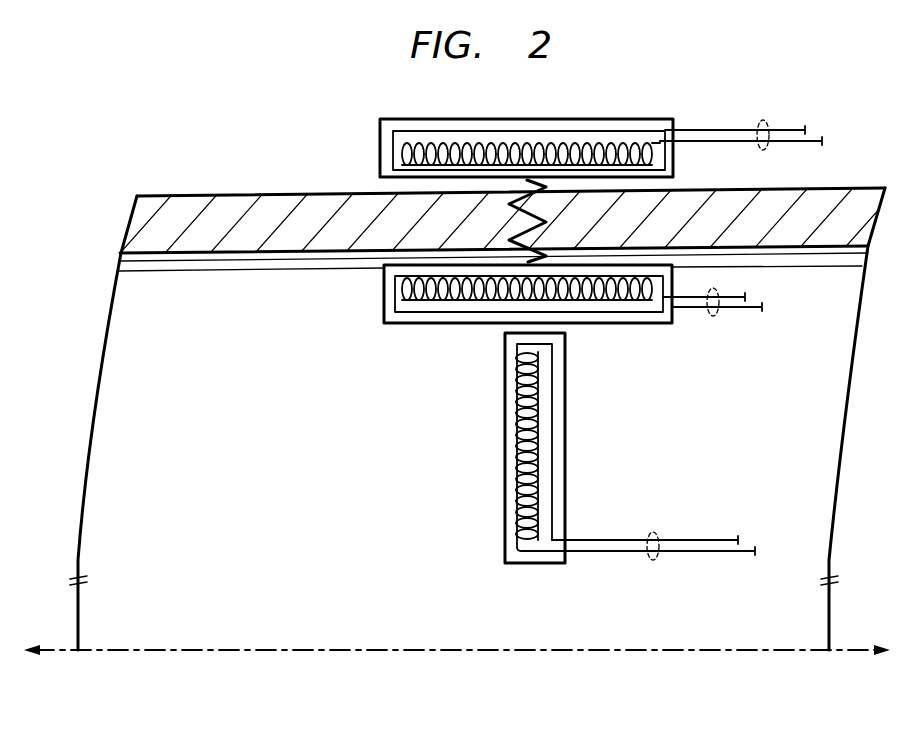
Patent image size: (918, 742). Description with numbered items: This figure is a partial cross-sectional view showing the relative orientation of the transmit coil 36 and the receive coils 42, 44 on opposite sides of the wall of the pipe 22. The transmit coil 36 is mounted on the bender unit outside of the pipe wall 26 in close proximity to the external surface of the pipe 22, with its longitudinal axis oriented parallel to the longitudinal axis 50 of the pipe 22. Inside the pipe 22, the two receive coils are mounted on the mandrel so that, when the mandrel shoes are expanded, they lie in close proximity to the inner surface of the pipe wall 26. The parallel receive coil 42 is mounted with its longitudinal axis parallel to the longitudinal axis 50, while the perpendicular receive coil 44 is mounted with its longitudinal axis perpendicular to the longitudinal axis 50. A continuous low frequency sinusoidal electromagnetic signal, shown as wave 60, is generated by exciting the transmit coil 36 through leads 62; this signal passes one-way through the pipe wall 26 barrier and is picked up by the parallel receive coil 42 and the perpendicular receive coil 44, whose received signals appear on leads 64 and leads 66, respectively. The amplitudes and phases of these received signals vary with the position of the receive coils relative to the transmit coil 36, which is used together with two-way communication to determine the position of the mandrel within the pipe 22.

The pipe 22 is at (228, 194).
The pipe wall 26 is at (792, 249).
The transmit coil 36 is at (380, 147).
The parallel receive coil 42 is at (384, 295).
The perpendicular receive coil 44 is at (505, 449).
The longitudinal axis 50 is at (457, 652).
The wave 60 is at (548, 226).
The leads 62 is at (765, 118).
The leads 64 is at (712, 320).
The leads 66 is at (653, 562).